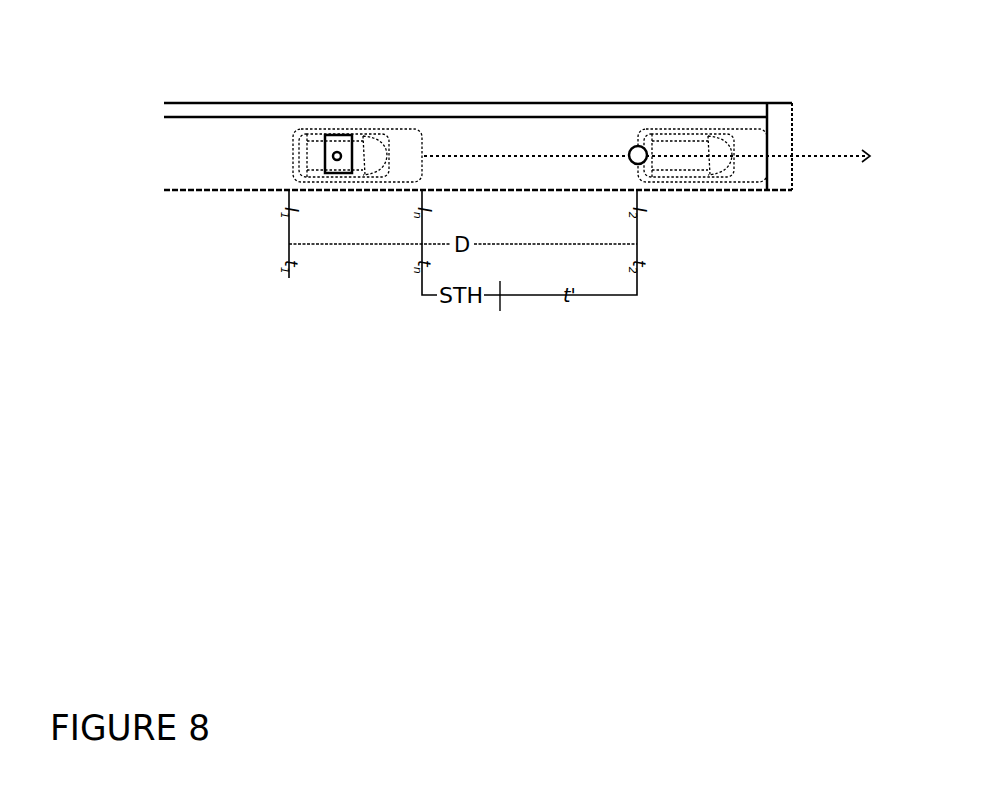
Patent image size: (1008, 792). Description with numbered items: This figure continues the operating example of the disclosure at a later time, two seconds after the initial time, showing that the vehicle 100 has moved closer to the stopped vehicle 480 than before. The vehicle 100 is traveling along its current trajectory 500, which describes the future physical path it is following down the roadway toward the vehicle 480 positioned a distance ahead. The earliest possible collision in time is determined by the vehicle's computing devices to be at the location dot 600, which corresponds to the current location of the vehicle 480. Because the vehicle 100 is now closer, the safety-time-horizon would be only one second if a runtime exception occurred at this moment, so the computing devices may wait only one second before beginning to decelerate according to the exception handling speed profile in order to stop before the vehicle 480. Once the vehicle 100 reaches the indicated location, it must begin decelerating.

The vehicle 100 is at (290, 173).
The vehicle 480 is at (729, 190).
The trajectory 500 is at (517, 152).
The location dot 600 is at (643, 133).